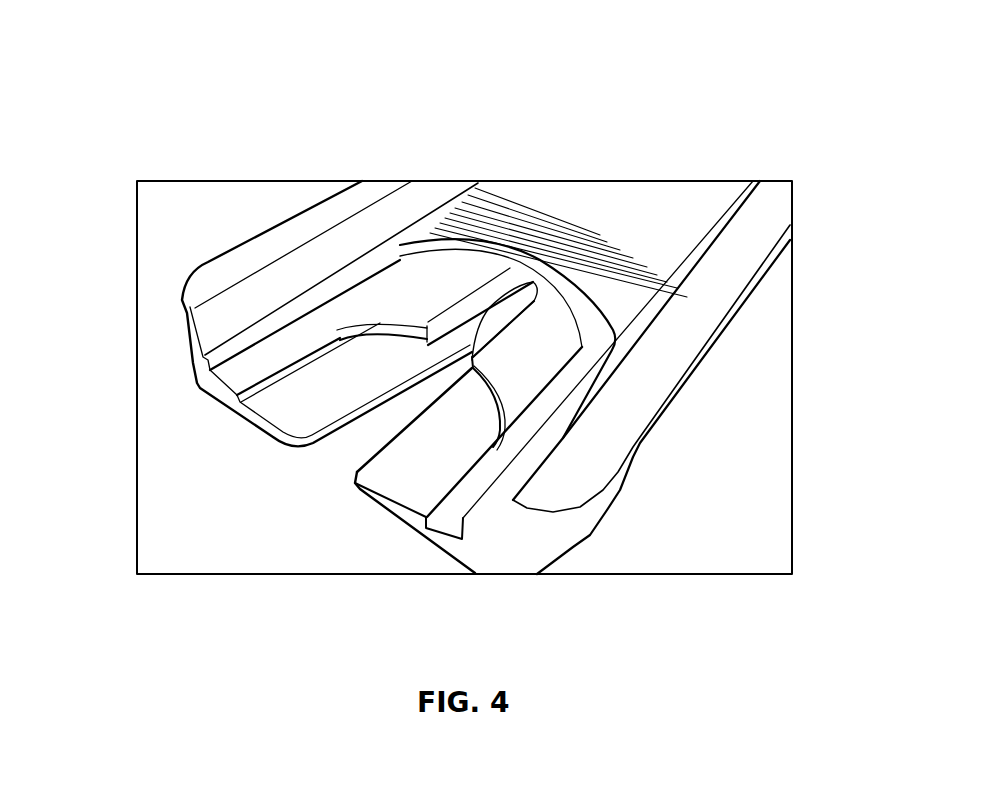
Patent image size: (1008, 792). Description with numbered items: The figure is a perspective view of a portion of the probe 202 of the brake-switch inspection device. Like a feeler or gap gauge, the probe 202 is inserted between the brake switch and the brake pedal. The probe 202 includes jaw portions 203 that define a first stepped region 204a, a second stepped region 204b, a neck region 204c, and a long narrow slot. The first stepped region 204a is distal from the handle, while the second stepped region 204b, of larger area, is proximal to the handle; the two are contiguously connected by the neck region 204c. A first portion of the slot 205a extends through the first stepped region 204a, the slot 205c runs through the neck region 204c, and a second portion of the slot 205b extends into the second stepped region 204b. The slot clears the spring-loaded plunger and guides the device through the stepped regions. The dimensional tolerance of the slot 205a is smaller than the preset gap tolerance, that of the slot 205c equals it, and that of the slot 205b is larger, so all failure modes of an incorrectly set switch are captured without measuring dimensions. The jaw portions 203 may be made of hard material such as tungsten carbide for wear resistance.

The probe 202 is at (387, 94).
The jaw portions 203 is at (263, 425).
The first stepped region 204a is at (325, 370).
The second stepped region 204b is at (423, 305).
The neck region 204c is at (505, 295).
The first portion of the slot 205a is at (363, 437).
The second portion of the slot 205b is at (482, 317).
The slot in the neck region 205c is at (450, 355).